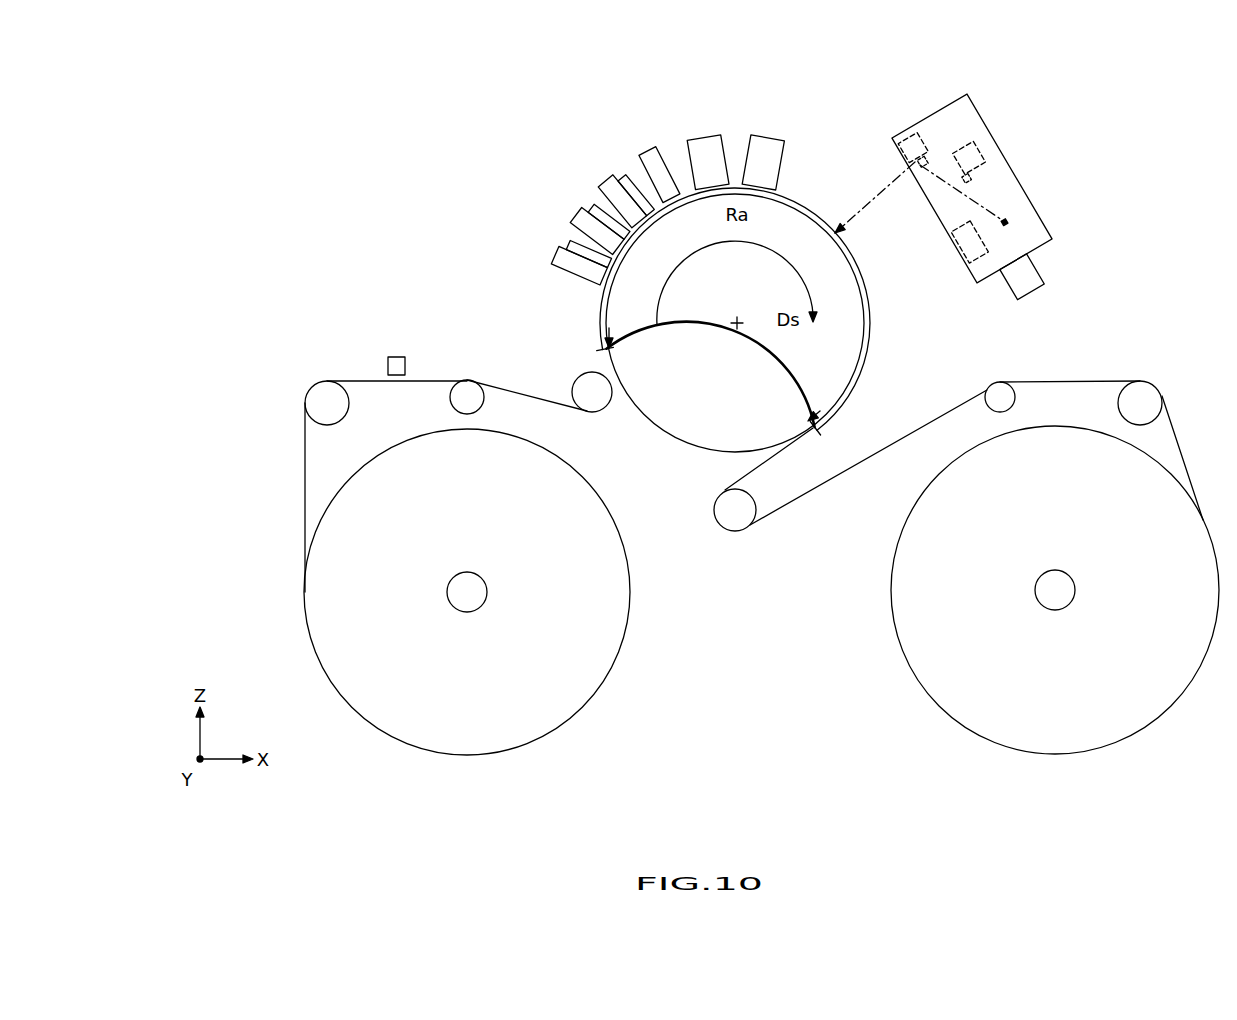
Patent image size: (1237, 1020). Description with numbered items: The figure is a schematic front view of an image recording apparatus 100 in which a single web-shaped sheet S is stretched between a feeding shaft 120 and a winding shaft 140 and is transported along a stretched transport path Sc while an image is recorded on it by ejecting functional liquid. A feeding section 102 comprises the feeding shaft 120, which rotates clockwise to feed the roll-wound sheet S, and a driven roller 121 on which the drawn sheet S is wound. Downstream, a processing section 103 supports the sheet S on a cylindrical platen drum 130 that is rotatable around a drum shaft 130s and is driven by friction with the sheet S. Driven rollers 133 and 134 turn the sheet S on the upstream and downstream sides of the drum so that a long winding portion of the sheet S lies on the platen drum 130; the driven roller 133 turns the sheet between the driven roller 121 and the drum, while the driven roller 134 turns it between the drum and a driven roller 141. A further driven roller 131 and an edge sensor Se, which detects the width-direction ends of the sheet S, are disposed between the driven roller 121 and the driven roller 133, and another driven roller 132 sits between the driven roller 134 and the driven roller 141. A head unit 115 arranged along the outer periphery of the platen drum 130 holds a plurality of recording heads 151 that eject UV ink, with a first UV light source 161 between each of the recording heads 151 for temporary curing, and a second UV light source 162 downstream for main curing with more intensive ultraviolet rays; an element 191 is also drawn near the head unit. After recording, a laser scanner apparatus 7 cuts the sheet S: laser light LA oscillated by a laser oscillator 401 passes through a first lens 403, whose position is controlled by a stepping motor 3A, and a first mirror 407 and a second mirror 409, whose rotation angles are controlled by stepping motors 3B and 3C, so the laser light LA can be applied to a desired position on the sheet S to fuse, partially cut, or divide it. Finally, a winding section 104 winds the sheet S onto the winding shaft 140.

The image recording apparatus 100 is at (663, 745).
The feeding section 102 is at (263, 463).
The processing section 103 is at (484, 157).
The winding section 104 is at (1107, 340).
The head unit 115 is at (590, 123).
The feeding shaft 120 is at (473, 598).
The driven roller 121 is at (348, 402).
The platen drum 130 is at (680, 430).
The drum shaft 130s is at (737, 325).
The driven roller 131 is at (467, 380).
The driven roller 132 is at (1012, 398).
The driven roller 133 is at (582, 380).
The driven roller 134 is at (745, 520).
The winding shaft 140 is at (1058, 600).
The driven roller 141 is at (1162, 395).
The recording head 151 is at (652, 158).
The first UV light source 161 is at (633, 186).
The second UV light source 162 is at (758, 165).
The sensor unit 191 is at (710, 160).
The laser scanner apparatus 7 is at (1037, 187).
The laser oscillator 401 is at (1033, 277).
The first lens 403 is at (1005, 223).
The first mirror 407 is at (967, 177).
The second mirror 409 is at (923, 165).
The stepping motor 3A is at (948, 237).
The stepping motor 3B is at (985, 135).
The stepping motor 3C is at (920, 128).
The edge sensor Se is at (398, 357).
The sheet S is at (900, 432).
The transport path Sc is at (826, 520).
The laser light LA is at (853, 215).